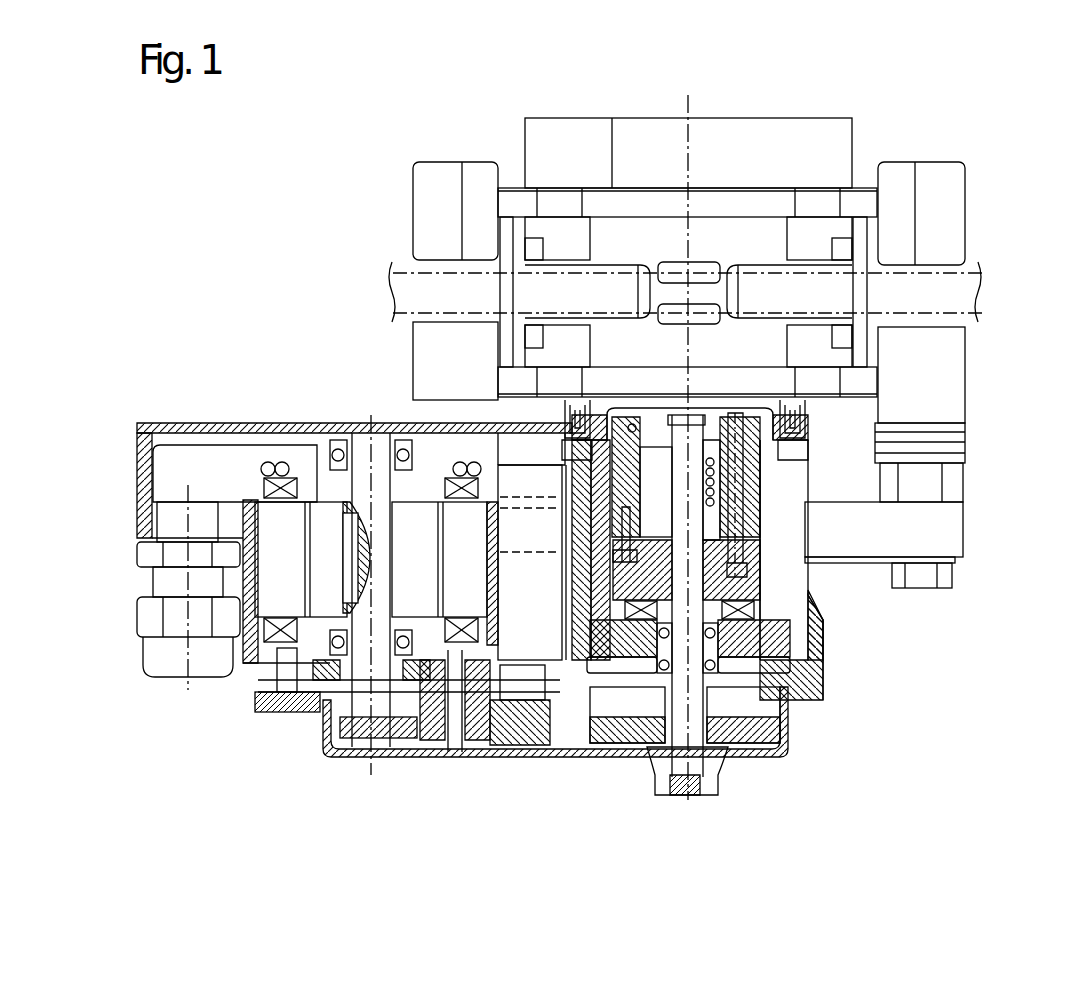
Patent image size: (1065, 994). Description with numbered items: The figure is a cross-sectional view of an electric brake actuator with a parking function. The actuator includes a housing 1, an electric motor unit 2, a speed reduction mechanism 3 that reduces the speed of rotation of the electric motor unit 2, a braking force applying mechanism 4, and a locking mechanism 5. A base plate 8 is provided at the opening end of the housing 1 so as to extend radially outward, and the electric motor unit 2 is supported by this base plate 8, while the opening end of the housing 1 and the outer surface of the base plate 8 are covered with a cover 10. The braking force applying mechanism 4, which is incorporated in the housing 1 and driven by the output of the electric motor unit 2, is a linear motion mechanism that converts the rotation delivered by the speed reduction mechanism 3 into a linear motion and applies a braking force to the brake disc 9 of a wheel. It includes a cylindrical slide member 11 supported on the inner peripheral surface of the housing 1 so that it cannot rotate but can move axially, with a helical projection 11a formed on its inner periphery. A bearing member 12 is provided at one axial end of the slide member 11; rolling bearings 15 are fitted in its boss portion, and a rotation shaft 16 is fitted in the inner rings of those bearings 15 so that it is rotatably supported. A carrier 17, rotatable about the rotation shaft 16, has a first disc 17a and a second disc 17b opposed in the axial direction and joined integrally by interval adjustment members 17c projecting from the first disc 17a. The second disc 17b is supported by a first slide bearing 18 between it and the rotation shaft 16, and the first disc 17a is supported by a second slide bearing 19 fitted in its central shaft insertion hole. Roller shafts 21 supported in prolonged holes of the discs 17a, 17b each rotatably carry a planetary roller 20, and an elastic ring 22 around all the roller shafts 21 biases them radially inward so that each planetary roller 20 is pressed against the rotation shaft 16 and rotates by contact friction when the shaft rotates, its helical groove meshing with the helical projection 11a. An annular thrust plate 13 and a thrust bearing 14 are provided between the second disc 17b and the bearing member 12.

The housing 1 is at (805, 647).
The electric motor unit 2 is at (303, 467).
The speed reduction mechanism 3 is at (594, 748).
The braking force applying mechanism 4 is at (755, 703).
The locking mechanism 5 is at (500, 722).
The base plate 8 is at (260, 670).
The brake disc 9 is at (984, 288).
The cover 10 is at (732, 760).
The slide member 11 is at (850, 480).
The helical projection 11a is at (895, 485).
The bearing member 12 is at (805, 660).
The annular thrust plate 13 is at (804, 589).
The thrust bearing 14 is at (813, 616).
The rolling bearings 15 is at (790, 692).
The rotation shaft 16 is at (800, 420).
The carrier 17 is at (617, 452).
The first disc 17a is at (648, 430).
The second disc 17b is at (648, 742).
The interval adjustment member 17c is at (630, 498).
The first slide bearing 18 is at (810, 533).
The second slide bearing 19 is at (790, 402).
The planetary roller 20 is at (697, 797).
The roller shaft 21 is at (878, 442).
The elastic ring 22 is at (650, 437).